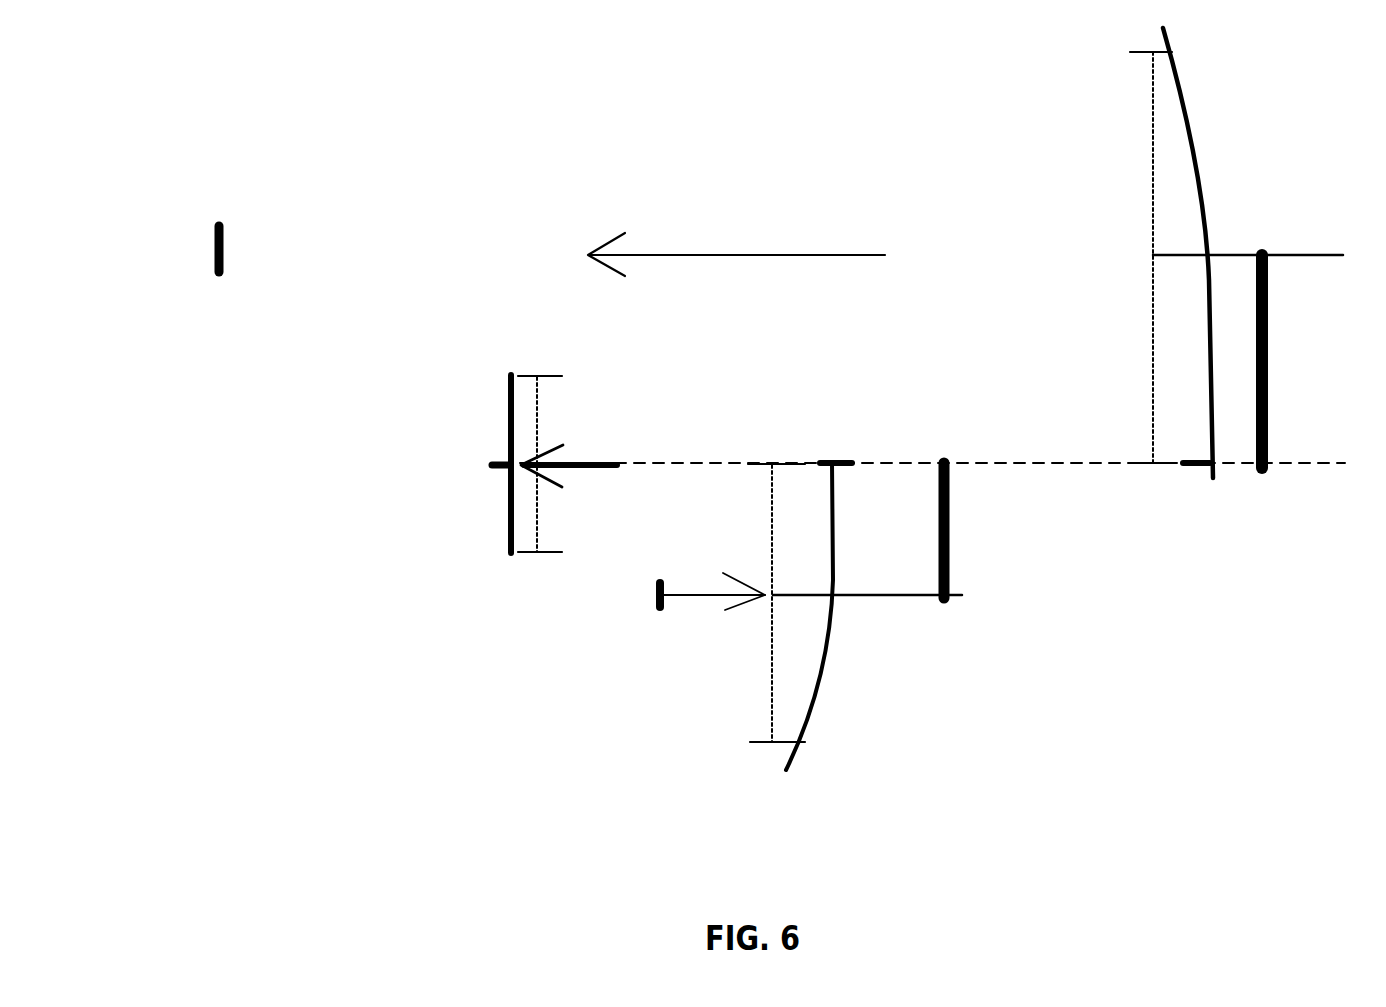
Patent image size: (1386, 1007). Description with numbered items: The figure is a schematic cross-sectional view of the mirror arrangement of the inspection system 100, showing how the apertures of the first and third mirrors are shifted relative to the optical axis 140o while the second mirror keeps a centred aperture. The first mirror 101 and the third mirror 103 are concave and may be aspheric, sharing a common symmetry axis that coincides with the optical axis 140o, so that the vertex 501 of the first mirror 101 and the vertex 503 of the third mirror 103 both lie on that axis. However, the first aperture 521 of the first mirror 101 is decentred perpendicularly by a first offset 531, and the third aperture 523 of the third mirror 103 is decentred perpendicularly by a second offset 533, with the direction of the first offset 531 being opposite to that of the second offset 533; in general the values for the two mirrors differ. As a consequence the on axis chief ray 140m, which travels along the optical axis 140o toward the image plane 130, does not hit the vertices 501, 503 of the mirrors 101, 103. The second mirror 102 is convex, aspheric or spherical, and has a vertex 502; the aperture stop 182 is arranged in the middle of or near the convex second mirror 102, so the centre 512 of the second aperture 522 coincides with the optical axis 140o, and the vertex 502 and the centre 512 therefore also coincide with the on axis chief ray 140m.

The inspection system 100 is at (476, 96).
The image plane 130 is at (215, 250).
The on axis chief ray 140m is at (815, 258).
The optical axis 140o is at (1071, 462).
The second mirror 102 is at (507, 383).
The vertex of the second mirror 502 is at (493, 460).
The centre of the second aperture 512 is at (510, 470).
The second aperture 522 is at (546, 464).
The vertex of the first mirror 501 is at (833, 458).
The first aperture 521 is at (775, 603).
The first offset 531 is at (950, 503).
The aperture stop 182 is at (652, 588).
The first mirror 101 is at (810, 727).
The third mirror 103 is at (1200, 155).
The third aperture 523 is at (1153, 257).
The second offset 533 is at (1272, 352).
The vertex of the third mirror 503 is at (1198, 467).